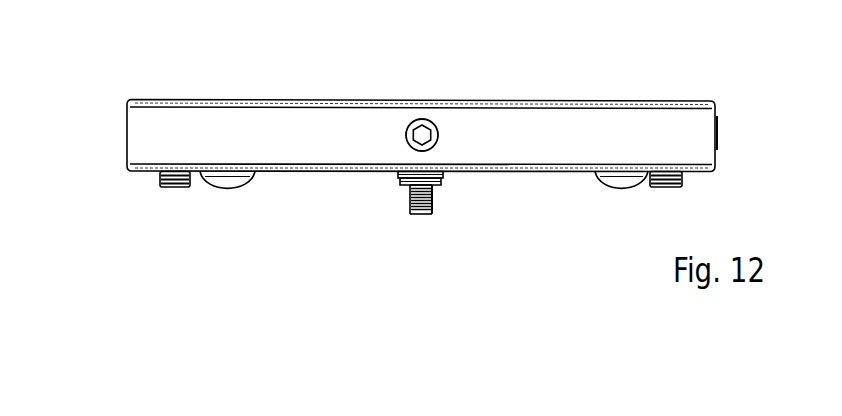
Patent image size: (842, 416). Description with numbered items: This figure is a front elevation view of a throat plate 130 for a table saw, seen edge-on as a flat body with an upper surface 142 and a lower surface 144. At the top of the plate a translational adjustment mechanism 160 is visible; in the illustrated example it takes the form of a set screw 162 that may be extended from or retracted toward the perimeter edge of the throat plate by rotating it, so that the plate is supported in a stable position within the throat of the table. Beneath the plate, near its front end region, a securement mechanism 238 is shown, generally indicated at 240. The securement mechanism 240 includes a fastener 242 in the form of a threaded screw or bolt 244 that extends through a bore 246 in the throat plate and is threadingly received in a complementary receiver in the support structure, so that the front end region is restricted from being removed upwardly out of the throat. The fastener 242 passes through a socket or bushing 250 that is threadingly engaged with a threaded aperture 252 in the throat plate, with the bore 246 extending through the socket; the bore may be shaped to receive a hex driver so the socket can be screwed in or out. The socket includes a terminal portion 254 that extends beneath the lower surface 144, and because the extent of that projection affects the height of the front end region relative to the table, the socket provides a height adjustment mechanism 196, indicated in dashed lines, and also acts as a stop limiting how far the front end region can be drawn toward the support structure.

The throat plate 130 is at (113, 92).
The upper surface 142 is at (627, 101).
The lower surface 144 is at (563, 172).
The translational adjustment mechanism 160 is at (423, 119).
The set screw 162 is at (435, 128).
The securement mechanism 238 is at (350, 203).
The securement mechanism 240 is at (392, 185).
The fastener 242 is at (413, 214).
The threaded screw or bolt 244 is at (423, 214).
The bore 246 is at (407, 189).
The socket or bushing 250 is at (452, 183).
The threaded aperture 252 is at (450, 178).
The terminal portion 254 is at (437, 192).
The height adjustment mechanism 196 is at (452, 198).